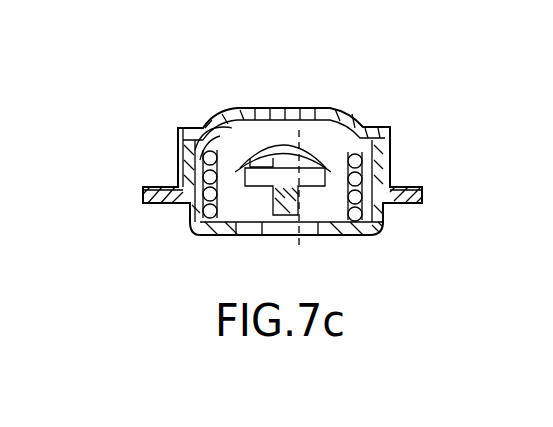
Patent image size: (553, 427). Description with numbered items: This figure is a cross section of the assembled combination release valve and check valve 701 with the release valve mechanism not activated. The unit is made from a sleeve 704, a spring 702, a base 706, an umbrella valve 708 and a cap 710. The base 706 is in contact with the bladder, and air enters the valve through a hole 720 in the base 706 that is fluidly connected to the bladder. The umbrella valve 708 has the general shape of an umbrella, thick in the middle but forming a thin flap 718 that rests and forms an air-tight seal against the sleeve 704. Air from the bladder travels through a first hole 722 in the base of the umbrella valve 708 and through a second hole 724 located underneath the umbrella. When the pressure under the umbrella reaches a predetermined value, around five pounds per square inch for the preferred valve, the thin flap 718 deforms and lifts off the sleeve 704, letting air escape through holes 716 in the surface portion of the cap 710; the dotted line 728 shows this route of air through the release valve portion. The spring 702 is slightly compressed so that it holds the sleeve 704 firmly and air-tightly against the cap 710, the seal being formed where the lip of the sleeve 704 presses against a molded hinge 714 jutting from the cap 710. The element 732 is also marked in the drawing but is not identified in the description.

The combination release valve and check valve 701 is at (432, 98).
The spring 702 is at (378, 205).
The sleeve 704 is at (182, 173).
The base 706 is at (365, 237).
The umbrella valve 708 is at (300, 110).
The cap 710 is at (400, 155).
The molded hinge 714 is at (185, 133).
The holes 716 is at (242, 108).
The thin flap 718 is at (180, 156).
The hole 720 is at (265, 238).
The first hole 722 is at (233, 241).
The second hole 724 is at (265, 106).
The dotted line 728 is at (362, 53).
The inner arc of cap 732 is at (215, 120).